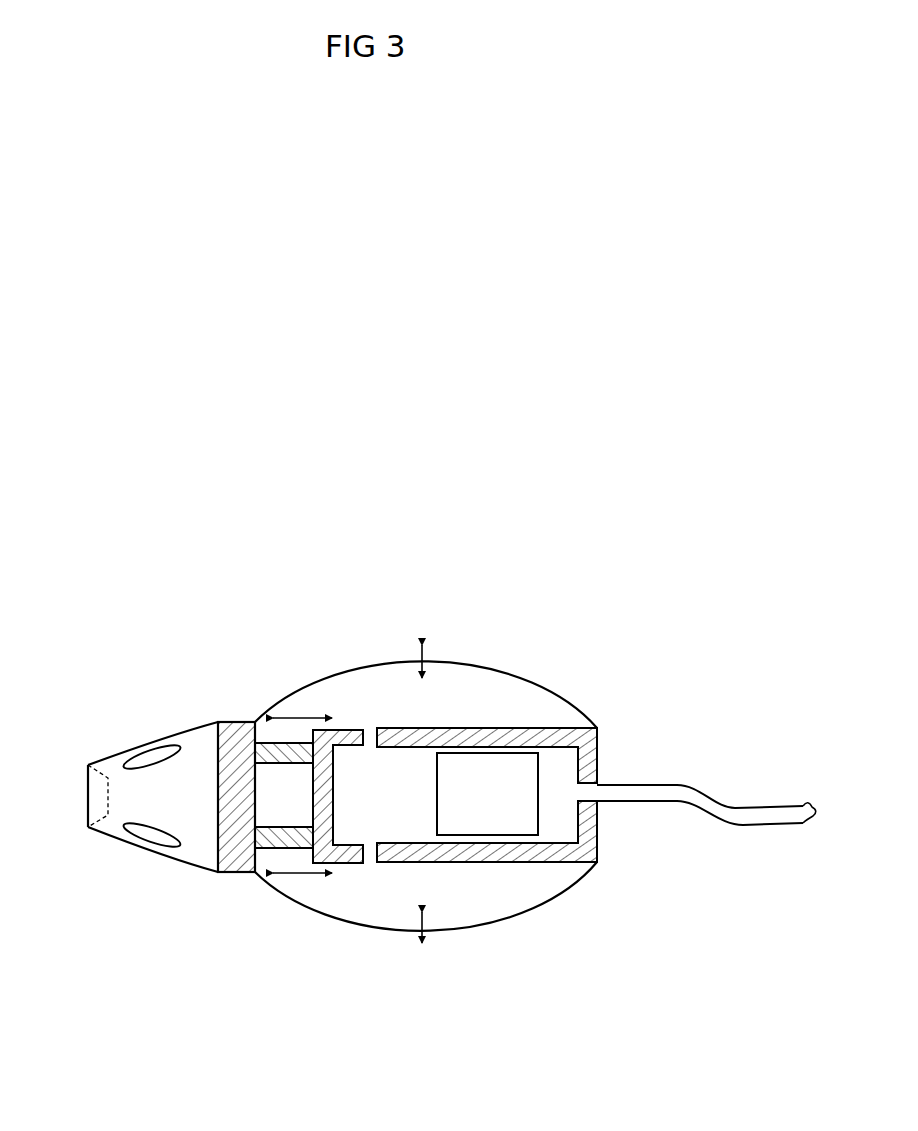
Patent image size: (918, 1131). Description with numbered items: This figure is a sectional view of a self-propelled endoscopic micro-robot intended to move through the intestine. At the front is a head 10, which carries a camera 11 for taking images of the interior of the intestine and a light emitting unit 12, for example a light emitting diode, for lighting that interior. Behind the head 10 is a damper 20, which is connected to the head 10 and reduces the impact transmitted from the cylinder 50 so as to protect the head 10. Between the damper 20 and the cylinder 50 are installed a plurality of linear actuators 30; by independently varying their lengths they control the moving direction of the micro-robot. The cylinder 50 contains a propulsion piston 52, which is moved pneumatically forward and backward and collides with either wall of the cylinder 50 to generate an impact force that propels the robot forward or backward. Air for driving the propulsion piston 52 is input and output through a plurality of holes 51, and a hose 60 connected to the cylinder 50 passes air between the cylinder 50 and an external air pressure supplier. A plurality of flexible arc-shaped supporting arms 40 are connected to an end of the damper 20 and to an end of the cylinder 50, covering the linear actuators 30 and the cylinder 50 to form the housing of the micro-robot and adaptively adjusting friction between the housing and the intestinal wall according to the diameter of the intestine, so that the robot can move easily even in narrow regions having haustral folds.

The head 10 is at (160, 737).
The camera 11 is at (90, 812).
The light emitting unit 12 is at (156, 842).
The damper 20 is at (229, 723).
The linear actuators 30 is at (270, 743).
The flexible arc-shaped supporting arms 40 is at (462, 660).
The cylinder 50 is at (563, 728).
The holes 51 is at (375, 857).
The propulsion piston 52 is at (515, 823).
The hose 60 is at (735, 810).